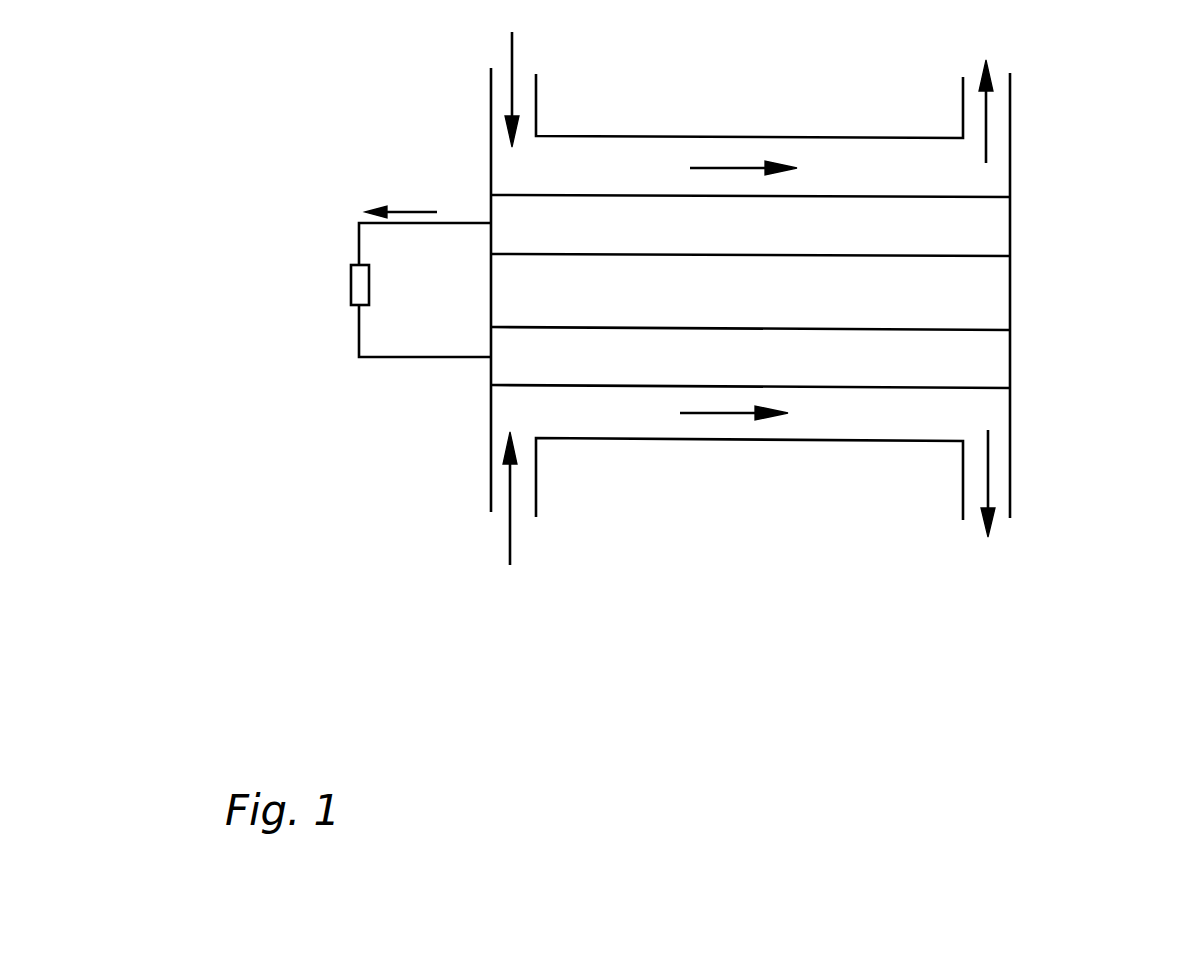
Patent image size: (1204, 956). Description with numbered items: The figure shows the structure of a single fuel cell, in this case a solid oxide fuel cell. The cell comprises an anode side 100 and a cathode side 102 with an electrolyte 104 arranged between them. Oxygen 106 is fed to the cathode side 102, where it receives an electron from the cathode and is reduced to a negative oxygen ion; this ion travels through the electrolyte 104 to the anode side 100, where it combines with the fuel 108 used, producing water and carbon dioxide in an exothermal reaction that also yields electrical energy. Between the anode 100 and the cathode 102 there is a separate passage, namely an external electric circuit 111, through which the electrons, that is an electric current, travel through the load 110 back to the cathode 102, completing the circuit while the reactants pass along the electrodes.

The anode side 100 is at (978, 222).
The cathode side 102 is at (970, 353).
The electrolyte 104 is at (978, 288).
The oxygen 106 is at (507, 547).
The fuel 108 is at (512, 55).
The load 110 is at (350, 287).
The external electric circuit 111 is at (312, 213).